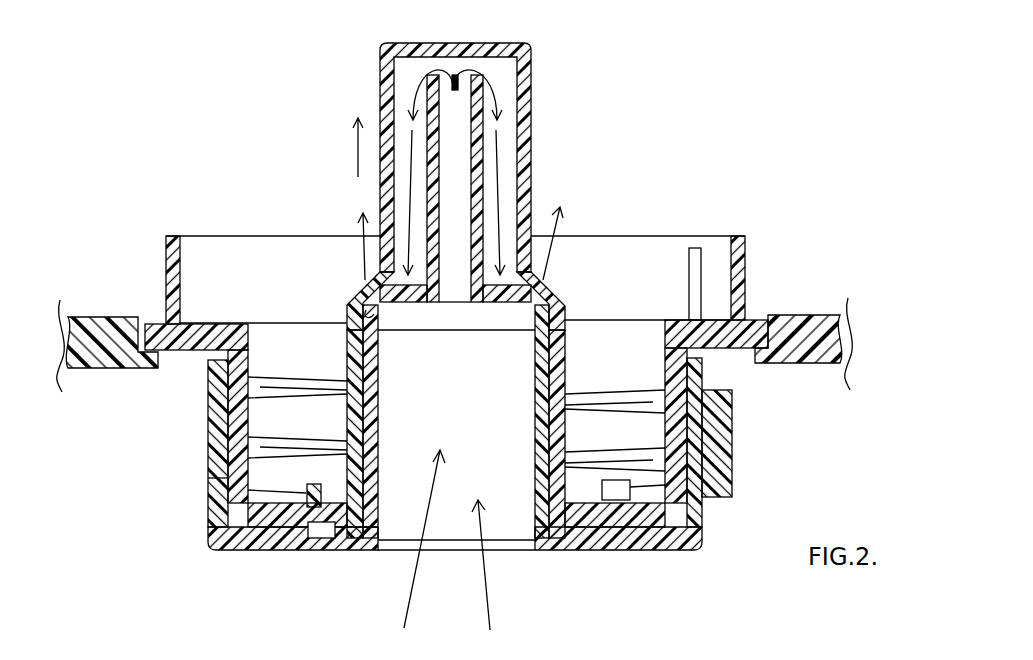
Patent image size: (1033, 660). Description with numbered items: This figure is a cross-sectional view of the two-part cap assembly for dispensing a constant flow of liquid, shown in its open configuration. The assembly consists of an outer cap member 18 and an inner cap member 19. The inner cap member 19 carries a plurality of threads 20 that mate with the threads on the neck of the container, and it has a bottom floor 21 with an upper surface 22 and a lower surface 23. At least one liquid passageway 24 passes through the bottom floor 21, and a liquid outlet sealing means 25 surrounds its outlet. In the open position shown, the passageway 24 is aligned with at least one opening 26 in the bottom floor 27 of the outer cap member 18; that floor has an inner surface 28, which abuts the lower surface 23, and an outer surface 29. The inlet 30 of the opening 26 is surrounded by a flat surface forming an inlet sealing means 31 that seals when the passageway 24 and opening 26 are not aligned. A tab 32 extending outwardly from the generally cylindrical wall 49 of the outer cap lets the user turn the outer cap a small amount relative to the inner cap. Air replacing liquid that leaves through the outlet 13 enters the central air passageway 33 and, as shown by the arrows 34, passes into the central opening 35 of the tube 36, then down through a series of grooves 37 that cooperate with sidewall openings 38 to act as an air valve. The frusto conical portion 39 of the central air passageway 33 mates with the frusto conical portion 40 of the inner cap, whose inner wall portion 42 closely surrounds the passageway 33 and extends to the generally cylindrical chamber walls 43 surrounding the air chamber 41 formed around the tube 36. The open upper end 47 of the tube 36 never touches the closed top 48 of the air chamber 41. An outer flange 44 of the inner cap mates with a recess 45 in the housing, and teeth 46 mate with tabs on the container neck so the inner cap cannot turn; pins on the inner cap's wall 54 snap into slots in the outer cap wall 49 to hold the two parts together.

The outlet 13 is at (341, 542).
The outer cap member 18 is at (213, 442).
The inner cap member 19 is at (665, 330).
The threads 20 is at (262, 388).
The bottom floor 21 is at (585, 470).
The upper surface 22 is at (218, 480).
The lower surface 23 is at (292, 535).
The liquid passageway 24 is at (320, 492).
The liquid outlet sealing means 25 is at (366, 480).
The opening 26 is at (320, 535).
The bottom floor 27 is at (600, 540).
The inner surface 28 is at (633, 545).
The outer surface 29 is at (680, 548).
The inlet 30 is at (330, 540).
The inlet sealing means 31 is at (376, 502).
The tab 32 is at (733, 447).
The central air passageway 33 is at (540, 467).
The arrows 34 is at (508, 172).
The central opening 35 is at (483, 152).
The tube 36 is at (428, 130).
The grooves 37 is at (513, 290).
The sidewall openings 38 is at (545, 296).
The frusto conical portion 39 is at (530, 316).
The frusto conical portion 40 is at (567, 300).
The air chamber 41 is at (503, 82).
The inner wall portion 42 is at (566, 370).
The chamber walls 43 is at (529, 137).
The outer flange 44 is at (158, 322).
The recess 45 is at (146, 320).
The teeth 46 is at (689, 283).
The upper end 47 is at (451, 85).
The closed top 48 is at (452, 48).
The cylindrical wall 49 is at (212, 387).
The wall 54 is at (722, 352).